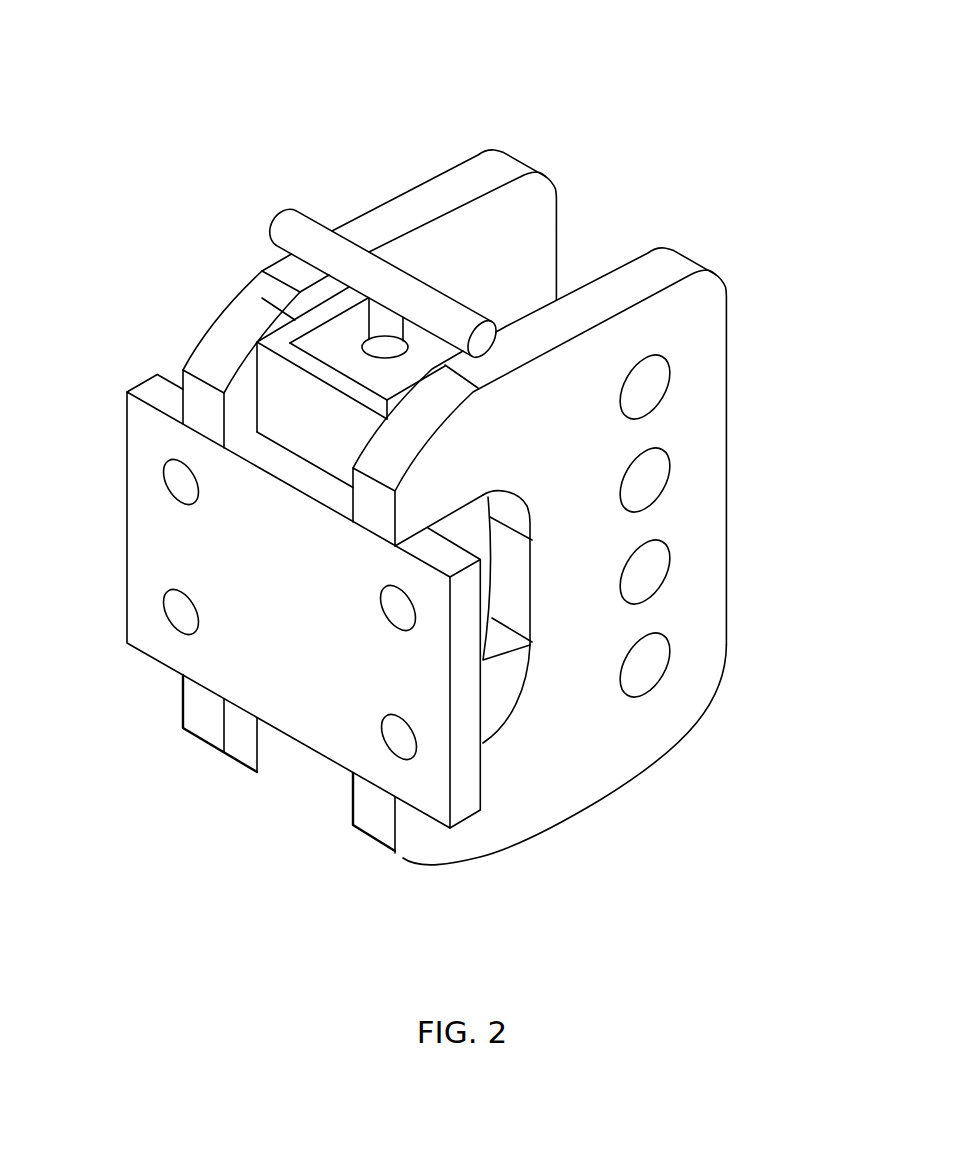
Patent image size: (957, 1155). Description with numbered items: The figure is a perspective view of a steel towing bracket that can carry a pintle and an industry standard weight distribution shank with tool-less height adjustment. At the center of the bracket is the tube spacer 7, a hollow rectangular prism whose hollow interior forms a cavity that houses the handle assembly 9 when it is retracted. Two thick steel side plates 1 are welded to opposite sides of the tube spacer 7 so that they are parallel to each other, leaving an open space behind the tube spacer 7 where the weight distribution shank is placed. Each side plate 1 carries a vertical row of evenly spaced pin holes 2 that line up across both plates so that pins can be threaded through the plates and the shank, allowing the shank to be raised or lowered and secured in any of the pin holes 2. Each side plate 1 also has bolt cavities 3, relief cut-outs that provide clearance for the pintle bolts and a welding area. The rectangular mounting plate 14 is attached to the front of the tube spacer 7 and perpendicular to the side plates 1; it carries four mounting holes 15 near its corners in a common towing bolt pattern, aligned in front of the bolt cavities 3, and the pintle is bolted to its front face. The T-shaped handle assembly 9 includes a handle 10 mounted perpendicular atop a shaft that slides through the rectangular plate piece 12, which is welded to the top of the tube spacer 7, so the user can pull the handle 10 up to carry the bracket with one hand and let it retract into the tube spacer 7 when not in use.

The side plate 1 is at (453, 190).
The pin hole 2 is at (648, 662).
The bolt cavity 3 is at (482, 540).
The tube spacer 7 is at (290, 385).
The handle assembly 9 is at (435, 277).
The handle 10 is at (307, 233).
The plate piece 12 is at (325, 338).
The mounting plate 14 is at (355, 690).
The mounting hole 15 is at (397, 742).